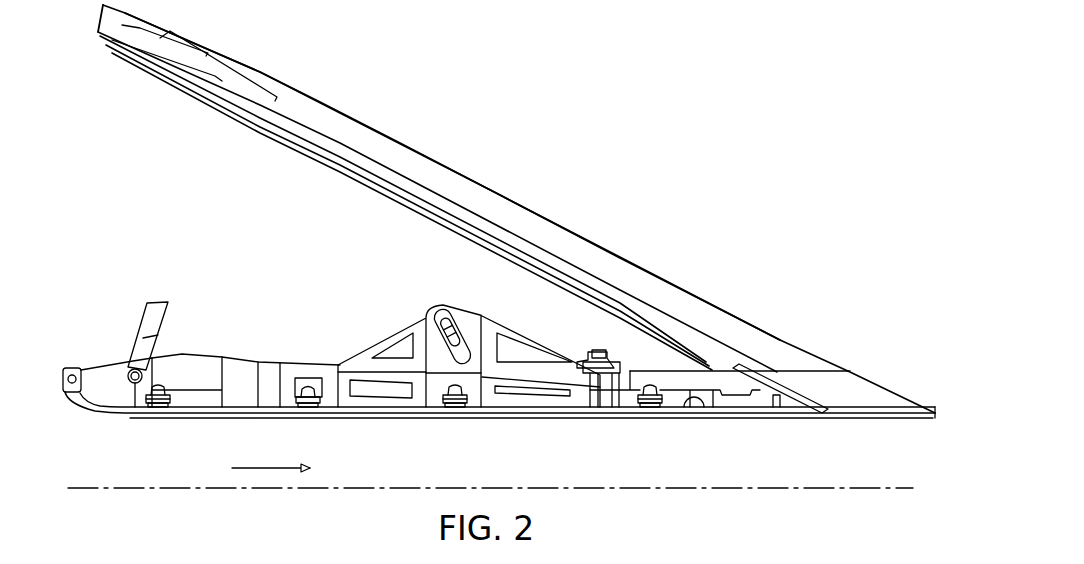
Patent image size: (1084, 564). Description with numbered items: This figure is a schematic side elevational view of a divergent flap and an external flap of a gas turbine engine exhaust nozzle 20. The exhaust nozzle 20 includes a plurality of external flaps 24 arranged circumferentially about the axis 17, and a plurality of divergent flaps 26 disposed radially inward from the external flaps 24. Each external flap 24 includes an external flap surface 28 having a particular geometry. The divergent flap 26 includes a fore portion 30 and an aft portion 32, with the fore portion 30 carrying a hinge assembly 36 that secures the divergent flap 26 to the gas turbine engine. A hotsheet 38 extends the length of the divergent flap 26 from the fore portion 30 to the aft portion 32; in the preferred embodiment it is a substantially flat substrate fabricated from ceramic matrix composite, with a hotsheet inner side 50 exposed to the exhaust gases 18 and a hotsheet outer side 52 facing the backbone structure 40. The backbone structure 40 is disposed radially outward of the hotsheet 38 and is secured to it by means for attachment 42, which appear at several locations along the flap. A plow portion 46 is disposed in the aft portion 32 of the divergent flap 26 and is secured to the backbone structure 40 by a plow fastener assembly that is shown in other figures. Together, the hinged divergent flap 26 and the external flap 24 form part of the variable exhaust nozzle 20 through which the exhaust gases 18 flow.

The axis 17 is at (723, 488).
The exhaust gases 18 is at (280, 463).
The exhaust nozzle 20 is at (508, 105).
The external flap 24 is at (578, 218).
The divergent flap 26 is at (557, 428).
The external flap surface 28 is at (692, 308).
The fore portion 30 is at (73, 415).
The aft portion 32 is at (888, 422).
The hinge assembly 36 is at (73, 370).
The hotsheet 38 is at (388, 419).
The backbone structure 40 is at (288, 345).
The means for attachment 42 is at (167, 403).
The plow portion 46 is at (898, 377).
The hotsheet inner side 50 is at (647, 418).
The hotsheet outer side 52 is at (703, 405).